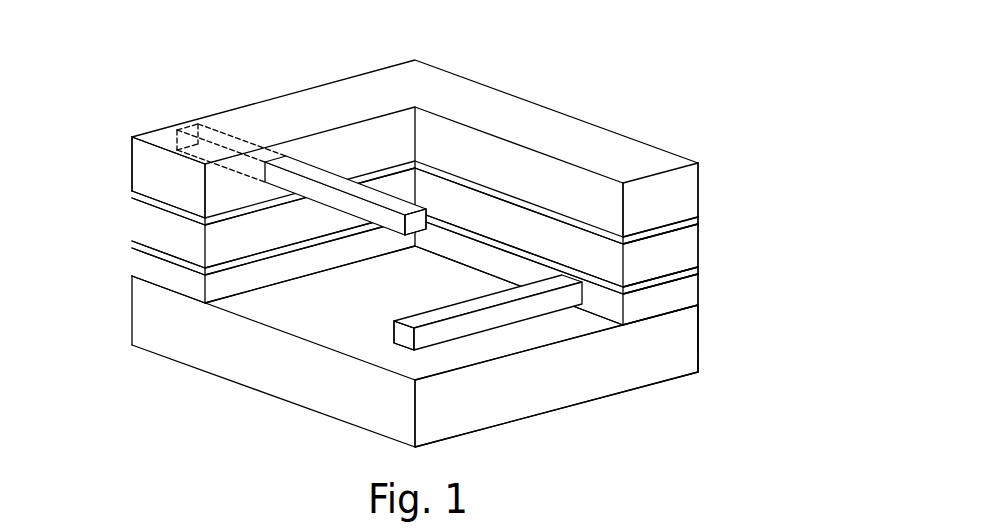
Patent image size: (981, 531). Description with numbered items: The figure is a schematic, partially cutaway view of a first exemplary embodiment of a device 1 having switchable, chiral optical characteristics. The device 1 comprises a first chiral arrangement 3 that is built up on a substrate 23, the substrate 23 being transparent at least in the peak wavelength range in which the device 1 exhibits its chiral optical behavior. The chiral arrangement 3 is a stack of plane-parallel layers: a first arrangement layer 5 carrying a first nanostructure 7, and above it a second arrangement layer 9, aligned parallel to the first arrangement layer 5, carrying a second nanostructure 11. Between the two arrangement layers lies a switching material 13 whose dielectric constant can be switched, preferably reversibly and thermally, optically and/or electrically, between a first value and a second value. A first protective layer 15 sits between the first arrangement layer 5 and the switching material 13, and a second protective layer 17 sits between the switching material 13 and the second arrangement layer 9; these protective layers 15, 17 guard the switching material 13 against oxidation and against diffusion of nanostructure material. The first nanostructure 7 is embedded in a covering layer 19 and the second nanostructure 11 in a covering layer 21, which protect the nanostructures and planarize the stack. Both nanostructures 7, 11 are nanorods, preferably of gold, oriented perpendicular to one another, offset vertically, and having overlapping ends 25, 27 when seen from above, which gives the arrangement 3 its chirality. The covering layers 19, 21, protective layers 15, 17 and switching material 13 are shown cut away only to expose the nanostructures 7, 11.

The device 1 is at (633, 71).
The first chiral arrangement 3 is at (709, 150).
The first arrangement layer 5 is at (131, 270).
The first nanostructure 7 is at (520, 310).
The second arrangement layer 9 is at (131, 165).
The second nanostructure 11 is at (300, 188).
The switching material 13 is at (135, 218).
The first protective layer 15 is at (132, 245).
The second protective layer 17 is at (132, 193).
The covering layer 19 is at (670, 300).
The covering layer 21 is at (362, 140).
The substrate 23 is at (700, 348).
The overlapping end 25 is at (425, 335).
The overlapping end 27 is at (427, 218).